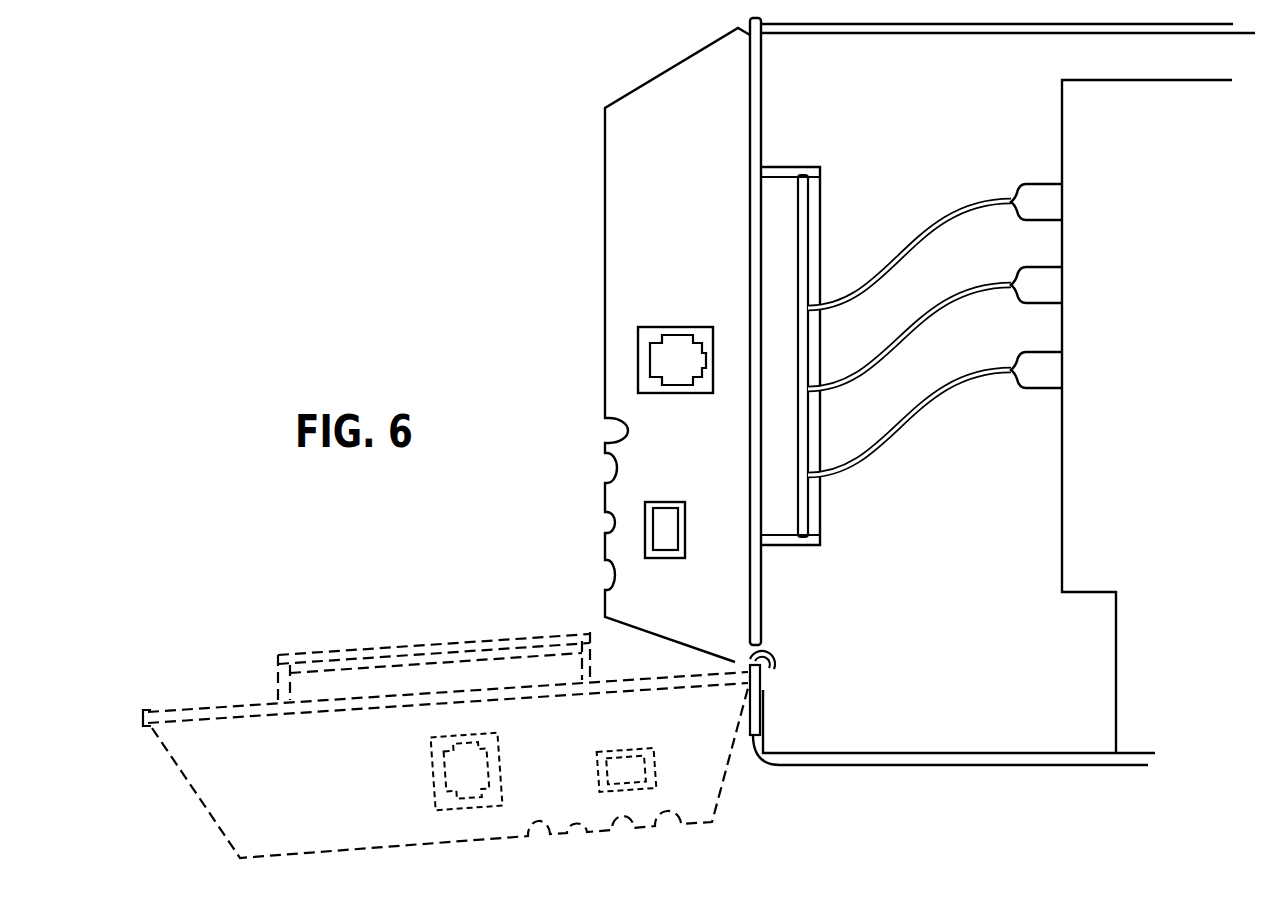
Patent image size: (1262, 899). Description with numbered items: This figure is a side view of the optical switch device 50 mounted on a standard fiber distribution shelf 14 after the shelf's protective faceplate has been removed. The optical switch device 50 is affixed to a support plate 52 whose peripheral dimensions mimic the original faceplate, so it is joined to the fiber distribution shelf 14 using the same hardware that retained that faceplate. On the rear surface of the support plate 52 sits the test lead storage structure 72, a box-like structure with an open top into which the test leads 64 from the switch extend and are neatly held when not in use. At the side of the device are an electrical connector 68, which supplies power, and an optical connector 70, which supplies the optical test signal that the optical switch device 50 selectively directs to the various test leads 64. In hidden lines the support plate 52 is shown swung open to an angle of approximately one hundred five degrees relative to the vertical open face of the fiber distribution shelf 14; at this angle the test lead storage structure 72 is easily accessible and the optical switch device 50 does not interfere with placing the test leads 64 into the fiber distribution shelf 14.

The fiber distribution shelf 14 is at (950, 766).
The optical switching device 50 is at (605, 186).
The support plate 52 is at (763, 92).
The test leads 64 is at (938, 323).
The electrical connector 68 is at (645, 518).
The optical connector 70 is at (638, 355).
The test lead storage structure 72 is at (821, 205).